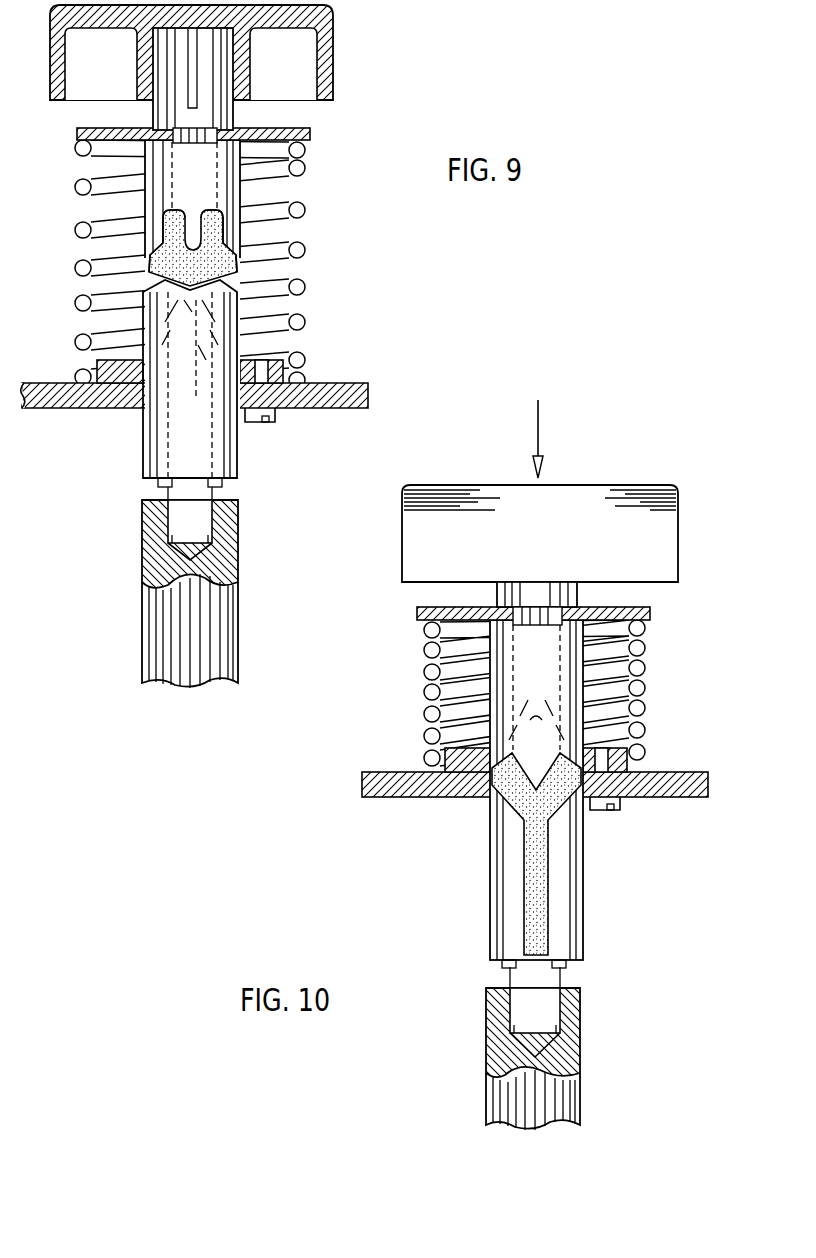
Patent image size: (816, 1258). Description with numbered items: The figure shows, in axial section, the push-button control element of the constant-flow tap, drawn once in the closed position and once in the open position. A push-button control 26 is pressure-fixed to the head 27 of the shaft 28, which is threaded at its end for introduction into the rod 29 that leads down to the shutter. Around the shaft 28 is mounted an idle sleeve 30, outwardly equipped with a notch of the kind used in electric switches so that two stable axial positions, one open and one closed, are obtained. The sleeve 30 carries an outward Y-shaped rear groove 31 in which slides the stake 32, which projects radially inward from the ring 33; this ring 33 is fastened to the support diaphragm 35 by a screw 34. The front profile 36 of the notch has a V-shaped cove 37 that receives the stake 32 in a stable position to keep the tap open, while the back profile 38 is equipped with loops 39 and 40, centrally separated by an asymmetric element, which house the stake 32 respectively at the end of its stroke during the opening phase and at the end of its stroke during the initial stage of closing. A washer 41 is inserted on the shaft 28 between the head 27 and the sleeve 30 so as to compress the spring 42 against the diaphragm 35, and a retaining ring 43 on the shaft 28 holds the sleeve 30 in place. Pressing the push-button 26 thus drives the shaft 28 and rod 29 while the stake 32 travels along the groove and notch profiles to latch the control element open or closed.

In FIG. 9, the push-button control 26 is at (331, 72).
In FIG. 10, the push-button control 26 is at (471, 508).
In FIG. 9, the head 27 is at (214, 77).
In FIG. 10, the head 27 is at (541, 594).
In FIG. 9, the shaft 28 is at (205, 129).
In FIG. 10, the shaft 28 is at (522, 612).
In FIG. 9, the rod 29 is at (158, 637).
In FIG. 10, the rod 29 is at (497, 1090).
In FIG. 9, the idle sleeve 30 is at (141, 465).
In FIG. 10, the idle sleeve 30 is at (489, 918).
In FIG. 9, the Y-shaped rear groove 31 is at (143, 323).
In FIG. 10, the Y-shaped rear groove 31 is at (506, 812).
In FIG. 9, the stake 32 is at (240, 345).
In FIG. 10, the stake 32 is at (652, 714).
In FIG. 9, the ring 33 is at (115, 366).
In FIG. 9, the screw 34 is at (263, 418).
In FIG. 10, the screw 34 is at (614, 809).
In FIG. 9, the support diaphragm 35 is at (47, 396).
In FIG. 10, the support diaphragm 35 is at (386, 798).
In FIG. 9, the front profile 36 is at (236, 290).
In FIG. 9, the V-shaped cove 37 is at (148, 261).
In FIG. 9, the back profile 38 is at (234, 254).
In FIG. 9, the loop 39 is at (168, 226).
In FIG. 9, the loop 40 is at (217, 232).
In FIG. 9, the washer 41 is at (112, 128).
In FIG. 10, the washer 41 is at (443, 607).
In FIG. 9, the spring 42 is at (306, 161).
In FIG. 10, the spring 42 is at (645, 662).
In FIG. 9, the retaining ring 43 is at (224, 482).
In FIG. 10, the retaining ring 43 is at (510, 965).